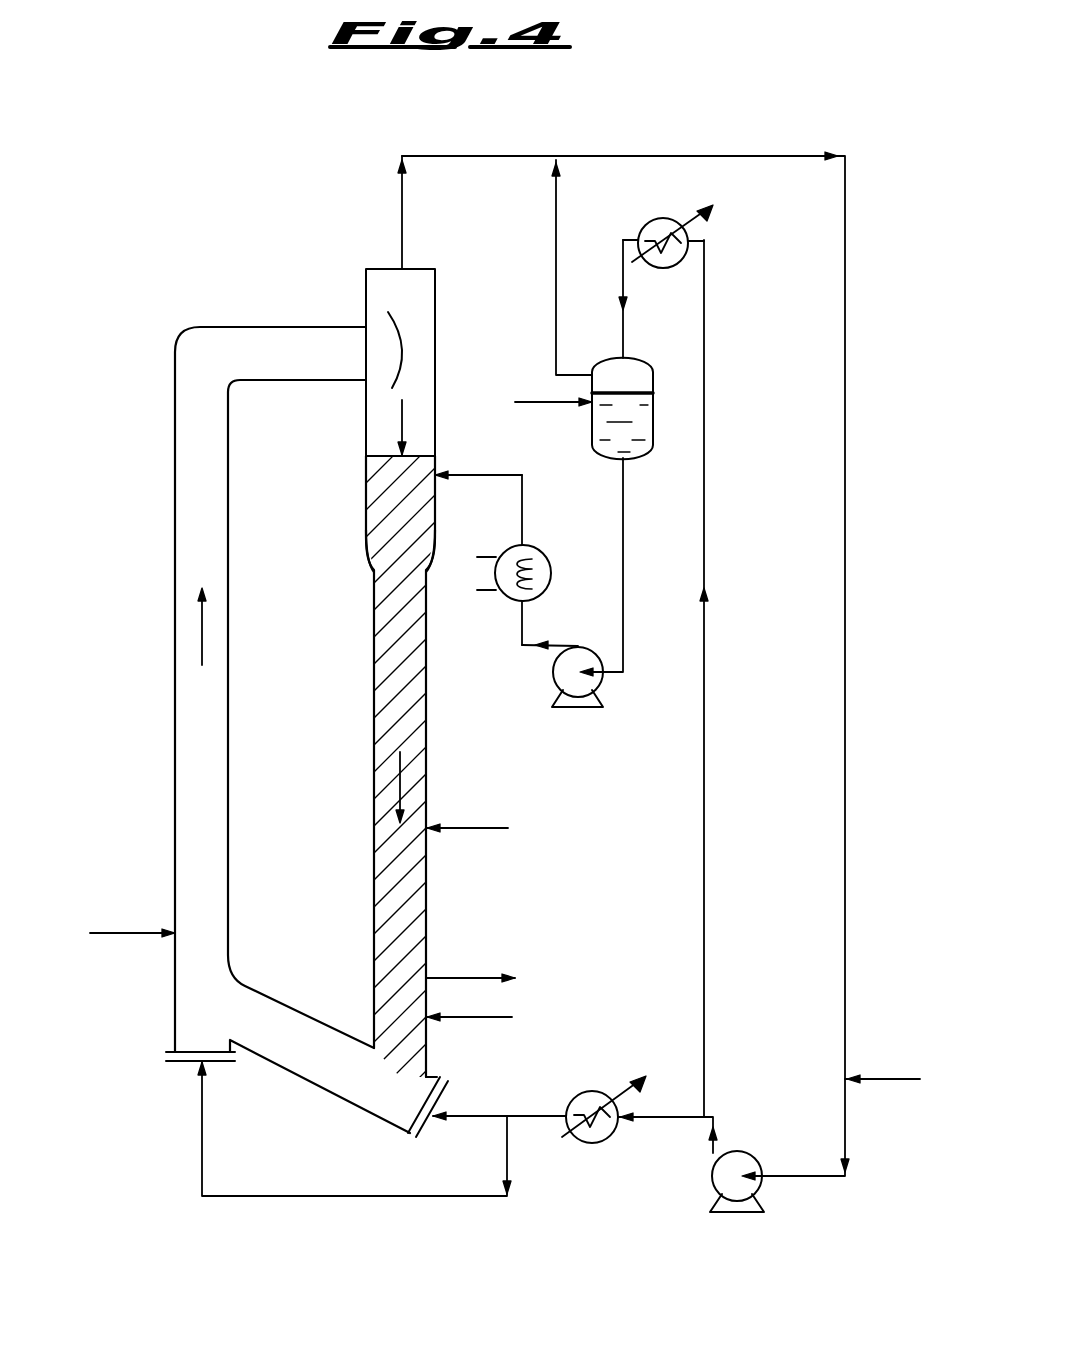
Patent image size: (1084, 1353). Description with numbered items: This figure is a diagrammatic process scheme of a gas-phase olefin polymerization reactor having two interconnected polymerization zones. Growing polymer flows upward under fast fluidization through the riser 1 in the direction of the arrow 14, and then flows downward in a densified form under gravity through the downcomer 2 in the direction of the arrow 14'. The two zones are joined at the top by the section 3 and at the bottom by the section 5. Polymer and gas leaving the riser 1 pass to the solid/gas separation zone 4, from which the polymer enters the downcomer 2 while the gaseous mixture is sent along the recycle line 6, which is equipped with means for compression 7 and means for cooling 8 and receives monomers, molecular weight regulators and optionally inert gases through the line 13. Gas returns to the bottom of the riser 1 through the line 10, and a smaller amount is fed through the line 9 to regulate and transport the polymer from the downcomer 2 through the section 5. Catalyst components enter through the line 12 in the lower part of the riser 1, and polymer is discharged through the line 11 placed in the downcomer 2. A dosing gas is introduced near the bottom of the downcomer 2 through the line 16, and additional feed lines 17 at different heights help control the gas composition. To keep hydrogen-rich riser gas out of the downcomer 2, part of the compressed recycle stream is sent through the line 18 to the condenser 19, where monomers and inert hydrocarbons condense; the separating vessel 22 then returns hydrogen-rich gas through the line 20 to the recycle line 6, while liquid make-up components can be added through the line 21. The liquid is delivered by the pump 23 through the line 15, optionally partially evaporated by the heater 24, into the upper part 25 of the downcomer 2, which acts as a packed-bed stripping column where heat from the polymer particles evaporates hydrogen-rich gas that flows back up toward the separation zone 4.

The riser 1 is at (230, 815).
The downcomer 2 is at (428, 620).
The interconnecting section 3 is at (282, 327).
The solid/gas separation zone 4 is at (437, 290).
The interconnecting section 5 is at (303, 1077).
The recycle line 6 is at (846, 478).
The means for compression 7 is at (750, 1150).
The means for cooling 8 is at (612, 1138).
The line 9 is at (483, 1110).
The line 10 is at (202, 1122).
The discharge line 11 is at (480, 978).
The catalyst feed line 12 is at (128, 930).
The make-up feed line 13 is at (880, 1079).
The arrow 14 is at (168, 633).
The arrow 14' is at (448, 781).
The barrier feed line 15 is at (528, 487).
The dosing gas line 16 is at (490, 1015).
The feed line 17 is at (488, 827).
The line 18 is at (706, 790).
The condenser 19 is at (695, 243).
The line 20 is at (556, 232).
The line 21 is at (530, 401).
The separating vessel 22 is at (640, 455).
The pump 23 is at (600, 692).
The heater 24 is at (552, 566).
The upper part of the downcomer 25 is at (372, 500).